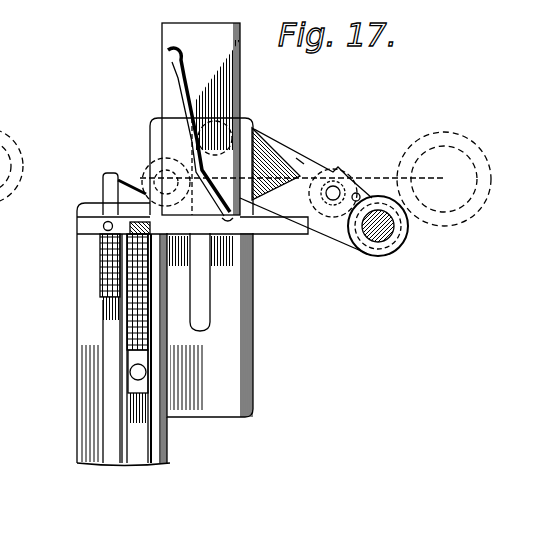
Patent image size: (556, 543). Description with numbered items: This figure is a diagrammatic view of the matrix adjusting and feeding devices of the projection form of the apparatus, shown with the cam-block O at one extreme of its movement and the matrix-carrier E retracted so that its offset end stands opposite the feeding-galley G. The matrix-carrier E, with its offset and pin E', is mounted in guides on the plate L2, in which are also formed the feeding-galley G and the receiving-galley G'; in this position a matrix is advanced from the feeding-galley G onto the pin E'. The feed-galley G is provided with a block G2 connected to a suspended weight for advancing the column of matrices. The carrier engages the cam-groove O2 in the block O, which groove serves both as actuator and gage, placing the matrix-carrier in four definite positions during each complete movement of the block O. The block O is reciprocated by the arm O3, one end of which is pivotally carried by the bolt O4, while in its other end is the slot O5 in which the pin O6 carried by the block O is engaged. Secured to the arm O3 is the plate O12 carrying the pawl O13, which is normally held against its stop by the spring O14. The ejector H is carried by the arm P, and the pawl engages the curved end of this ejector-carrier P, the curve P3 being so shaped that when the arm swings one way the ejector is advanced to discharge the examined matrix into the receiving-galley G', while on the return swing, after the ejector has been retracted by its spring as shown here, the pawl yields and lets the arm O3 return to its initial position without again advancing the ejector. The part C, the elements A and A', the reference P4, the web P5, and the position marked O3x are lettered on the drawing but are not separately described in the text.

The carrier bar C is at (218, 16).
The block O is at (234, 60).
The pin O6 is at (205, 113).
The slot O5 is at (228, 120).
The plate L2 is at (218, 140).
The cam-groove O2 is at (190, 178).
The matrix-carrier E is at (196, 246).
The ejector H is at (103, 176).
The ejector-carrier arm P is at (126, 182).
The pin E' is at (94, 236).
The spring A is at (76, 277).
The second spring A' is at (84, 292).
The receiving-galley G' is at (88, 348).
The block G2 is at (143, 360).
The feeding-galley G is at (136, 350).
The lever web P5 is at (252, 160).
The arm O3 is at (276, 168).
The lever stop P4 is at (298, 158).
The curve P3 is at (343, 175).
The plate O12 is at (360, 170).
The pawl O13 is at (340, 237).
The bolt O4 is at (393, 233).
The spring O14 is at (238, 170).
The roller outer path O3x is at (472, 166).